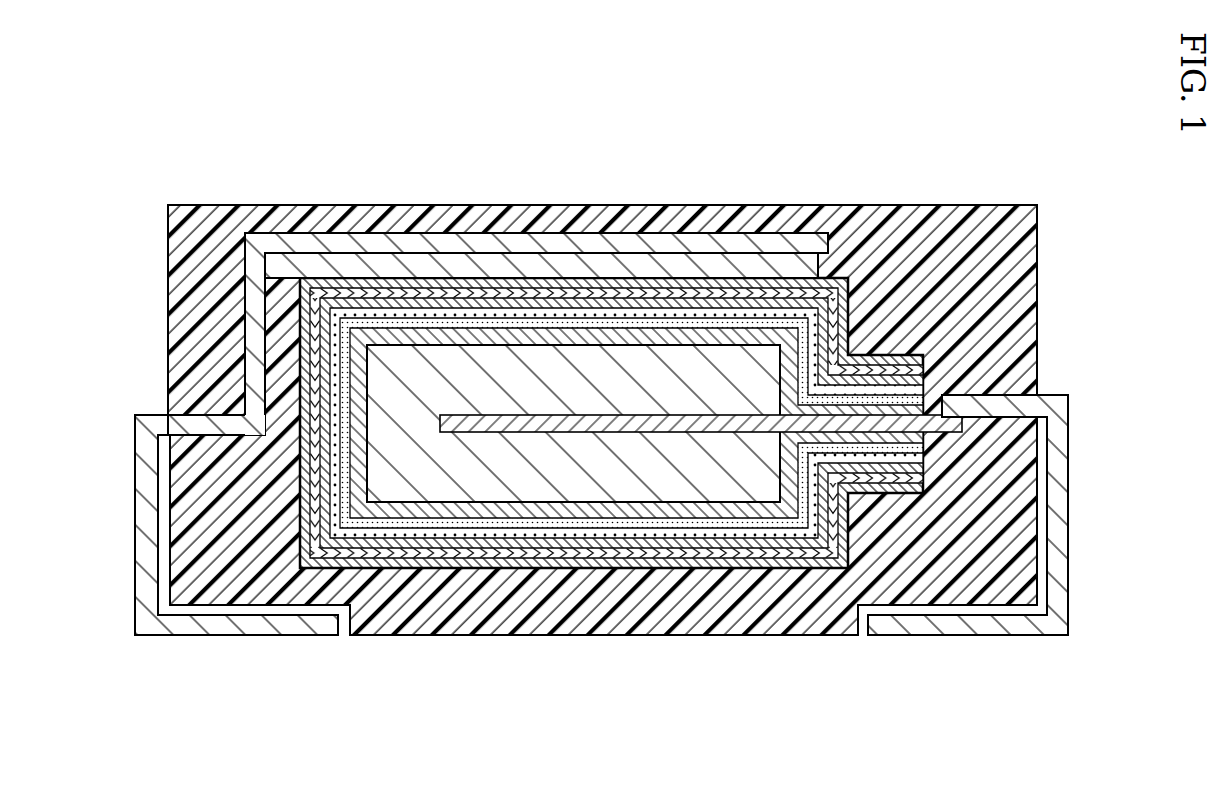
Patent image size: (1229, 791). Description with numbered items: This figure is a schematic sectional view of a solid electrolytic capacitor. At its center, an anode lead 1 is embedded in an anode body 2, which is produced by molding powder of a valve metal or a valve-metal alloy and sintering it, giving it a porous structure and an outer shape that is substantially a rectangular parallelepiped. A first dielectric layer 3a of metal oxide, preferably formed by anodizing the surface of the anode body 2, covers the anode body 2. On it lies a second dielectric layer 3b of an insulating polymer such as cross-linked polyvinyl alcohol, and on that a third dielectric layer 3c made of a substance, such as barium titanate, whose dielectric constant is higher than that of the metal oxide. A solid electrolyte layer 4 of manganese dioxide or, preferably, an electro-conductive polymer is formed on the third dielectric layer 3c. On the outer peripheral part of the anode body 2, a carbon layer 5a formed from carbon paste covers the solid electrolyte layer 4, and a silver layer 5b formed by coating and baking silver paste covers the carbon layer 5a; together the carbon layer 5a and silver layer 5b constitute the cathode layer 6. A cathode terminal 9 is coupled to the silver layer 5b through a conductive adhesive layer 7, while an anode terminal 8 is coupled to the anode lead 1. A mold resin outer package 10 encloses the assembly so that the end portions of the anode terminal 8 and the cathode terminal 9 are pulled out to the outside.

The anode lead 1 is at (678, 424).
The anode body 2 is at (537, 363).
The first dielectric layer 3a is at (762, 510).
The second dielectric layer 3b is at (698, 523).
The third dielectric layer 3c is at (648, 533).
The solid electrolyte layer 4 is at (597, 545).
The carbon layer 5a is at (452, 565).
The silver layer 5b is at (377, 570).
The cathode layer 6 is at (327, 738).
The conductive adhesive layer 7 is at (412, 265).
The anode terminal 8 is at (993, 405).
The cathode terminal 9 is at (305, 243).
The mold resin outer package 10 is at (888, 245).